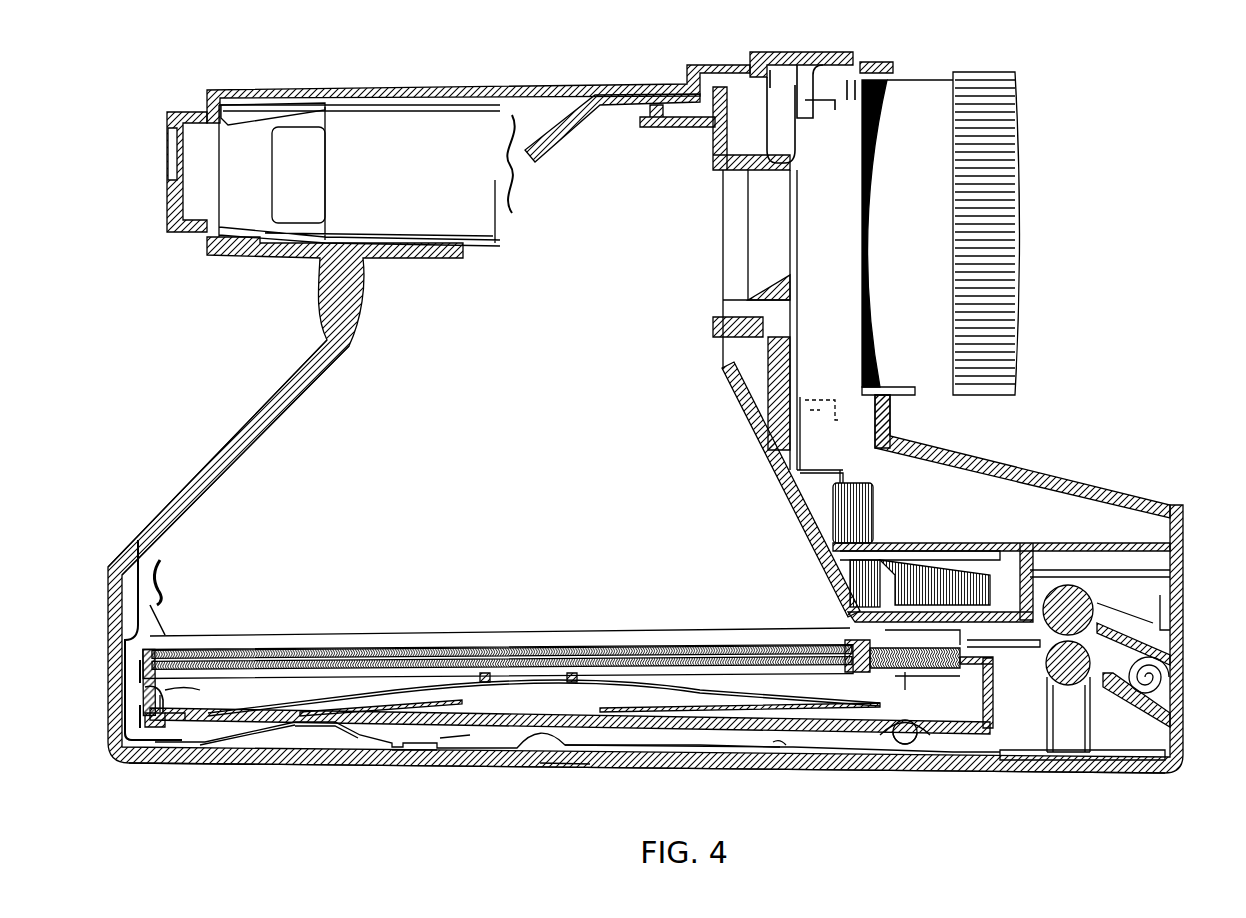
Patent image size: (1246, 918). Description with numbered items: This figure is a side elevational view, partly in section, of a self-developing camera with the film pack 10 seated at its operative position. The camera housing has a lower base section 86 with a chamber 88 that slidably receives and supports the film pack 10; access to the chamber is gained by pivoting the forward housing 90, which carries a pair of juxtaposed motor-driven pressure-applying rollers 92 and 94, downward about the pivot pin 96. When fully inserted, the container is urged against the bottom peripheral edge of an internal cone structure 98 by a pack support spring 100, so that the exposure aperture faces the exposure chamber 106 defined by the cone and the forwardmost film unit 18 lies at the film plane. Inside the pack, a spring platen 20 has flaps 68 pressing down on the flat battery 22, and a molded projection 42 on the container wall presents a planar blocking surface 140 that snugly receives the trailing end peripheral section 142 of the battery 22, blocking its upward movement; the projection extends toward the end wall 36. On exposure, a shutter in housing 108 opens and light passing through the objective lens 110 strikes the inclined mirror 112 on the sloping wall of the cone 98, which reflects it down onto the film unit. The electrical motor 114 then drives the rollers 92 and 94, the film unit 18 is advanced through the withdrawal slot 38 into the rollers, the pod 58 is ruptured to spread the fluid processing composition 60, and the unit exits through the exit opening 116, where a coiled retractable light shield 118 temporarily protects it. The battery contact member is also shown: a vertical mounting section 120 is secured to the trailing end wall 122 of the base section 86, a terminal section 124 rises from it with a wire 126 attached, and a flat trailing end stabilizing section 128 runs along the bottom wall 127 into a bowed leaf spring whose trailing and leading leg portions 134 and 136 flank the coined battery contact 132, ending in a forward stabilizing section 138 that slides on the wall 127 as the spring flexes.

The film pack 10 is at (995, 717).
The self-developing film unit 18 is at (783, 643).
The spring platen 20 is at (168, 683).
The battery 22 is at (512, 735).
The end wall 36 is at (993, 692).
The withdrawal slot 38 is at (990, 662).
The projection 42 is at (148, 685).
The pod 58 is at (887, 673).
The fluid processing composition 60 is at (900, 673).
The flaps 68 is at (405, 698).
The lower base section 86 is at (562, 778).
The chamber 88 is at (460, 733).
The forward housing 90 is at (1050, 763).
The pressure-applying roller 92 is at (1080, 600).
The pressure-applying roller 94 is at (1083, 657).
The pivot pin 96 is at (908, 747).
The cone structure 98 is at (227, 530).
The pack support spring 100 is at (607, 742).
The exposure chamber 106 is at (367, 490).
The shutter housing 108 is at (840, 170).
The objective lens 110 is at (1015, 218).
The inclined mirror 112 is at (567, 227).
The electrical motor 114 is at (1183, 603).
The exit opening 116 is at (1168, 705).
The coiled retractable light shield 118 is at (1168, 675).
The vertical mounting section 120 is at (145, 676).
The trailing end wall 122 is at (150, 713).
The terminal section 124 is at (172, 620).
The wire 126 is at (160, 578).
The bottom wall 127 is at (282, 763).
The trailing end stabilizing section 128 is at (177, 742).
The battery contact 132 is at (312, 722).
The trailing leg portion 134 is at (250, 740).
The leading leg portion 136 is at (358, 733).
The forward stabilizing section 138 is at (410, 745).
The blocking surface 140 is at (152, 715).
The trailing end peripheral section 142 is at (188, 720).